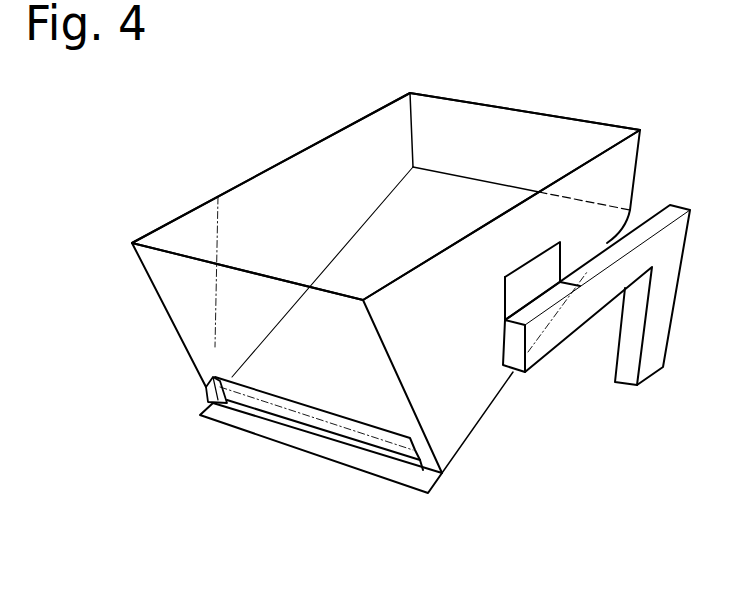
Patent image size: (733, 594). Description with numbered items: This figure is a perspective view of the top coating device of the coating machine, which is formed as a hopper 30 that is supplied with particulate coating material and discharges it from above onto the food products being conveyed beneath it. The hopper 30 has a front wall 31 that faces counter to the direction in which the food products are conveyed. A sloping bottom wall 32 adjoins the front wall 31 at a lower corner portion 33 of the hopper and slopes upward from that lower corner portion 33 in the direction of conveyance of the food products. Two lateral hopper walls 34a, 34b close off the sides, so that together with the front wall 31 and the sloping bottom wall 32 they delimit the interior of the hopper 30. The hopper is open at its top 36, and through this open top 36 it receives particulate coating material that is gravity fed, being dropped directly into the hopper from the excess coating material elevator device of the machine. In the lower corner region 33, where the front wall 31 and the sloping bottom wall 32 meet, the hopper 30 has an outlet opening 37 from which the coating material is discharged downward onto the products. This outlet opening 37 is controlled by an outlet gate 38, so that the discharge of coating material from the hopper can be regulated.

The hopper 30 is at (130, 433).
The front wall 31 is at (178, 285).
The sloping bottom wall 32 is at (450, 218).
The lower corner portion 33 is at (455, 472).
The lateral hopper wall 34a is at (455, 398).
The lateral hopper wall 34b is at (307, 168).
The top 36 is at (440, 127).
The outlet opening 37 is at (315, 428).
The outlet gate 38 is at (207, 387).